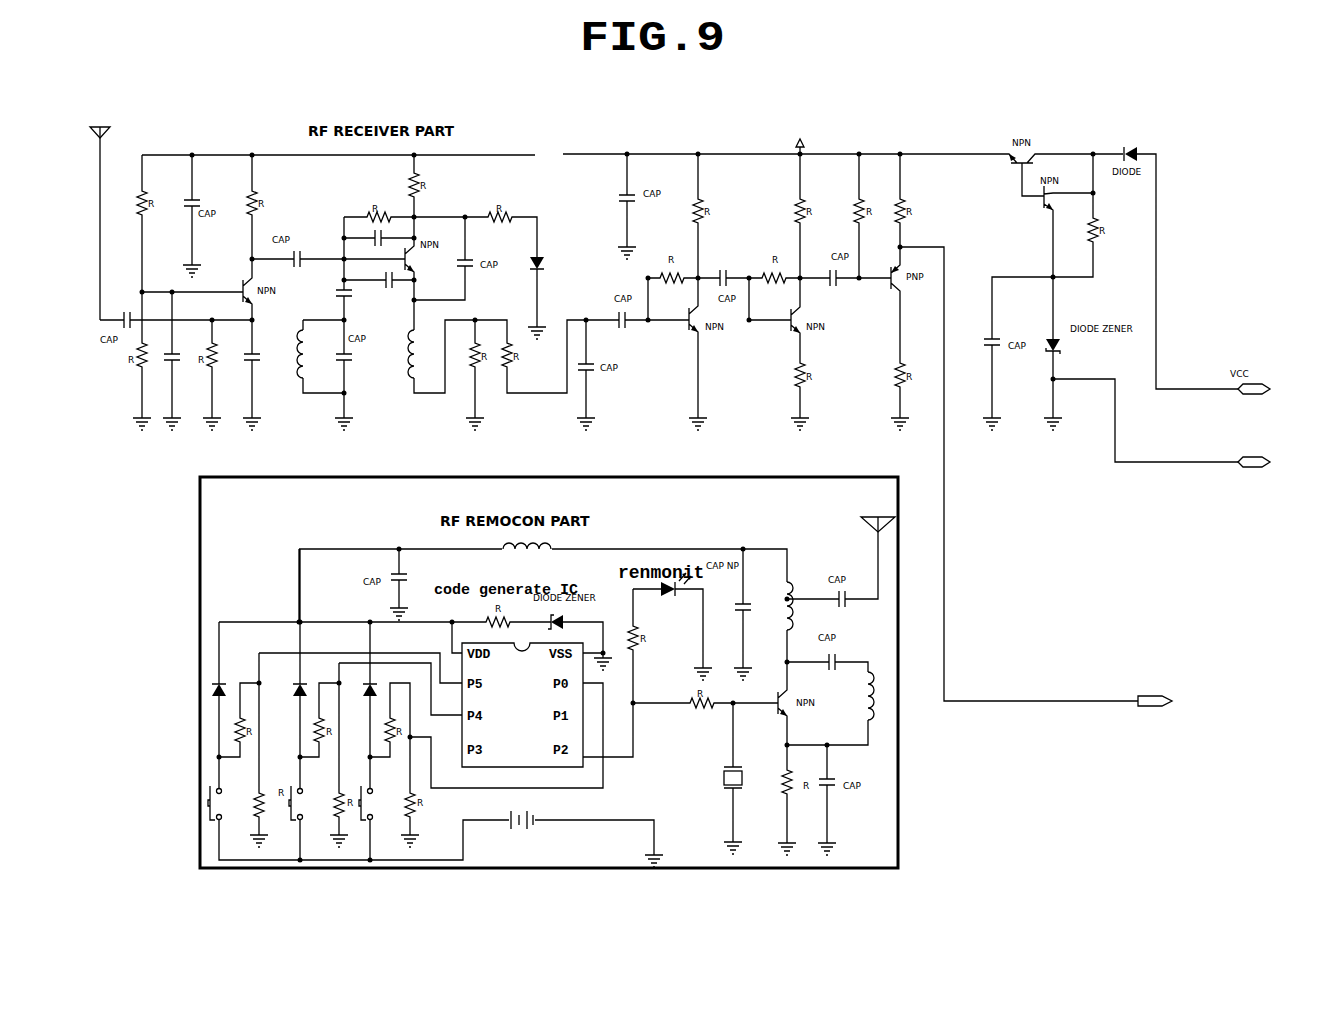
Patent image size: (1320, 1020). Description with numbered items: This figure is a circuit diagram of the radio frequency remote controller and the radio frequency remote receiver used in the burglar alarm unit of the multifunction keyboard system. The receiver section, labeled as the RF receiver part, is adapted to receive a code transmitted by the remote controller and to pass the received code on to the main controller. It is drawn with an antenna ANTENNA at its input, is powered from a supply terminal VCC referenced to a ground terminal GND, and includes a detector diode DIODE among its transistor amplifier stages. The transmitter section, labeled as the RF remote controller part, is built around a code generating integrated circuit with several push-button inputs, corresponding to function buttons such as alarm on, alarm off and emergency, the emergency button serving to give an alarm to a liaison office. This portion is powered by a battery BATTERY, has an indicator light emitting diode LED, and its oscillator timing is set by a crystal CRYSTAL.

The receiver antenna ANTENNA is at (119, 213).
The supply voltage terminal VCC is at (801, 138).
The ground terminal GND is at (1161, 423).
The detector diode DIODE is at (554, 263).
The battery BATTERY is at (548, 816).
The light emitting diode LED is at (673, 591).
The crystal oscillator CRYSTAL is at (717, 787).